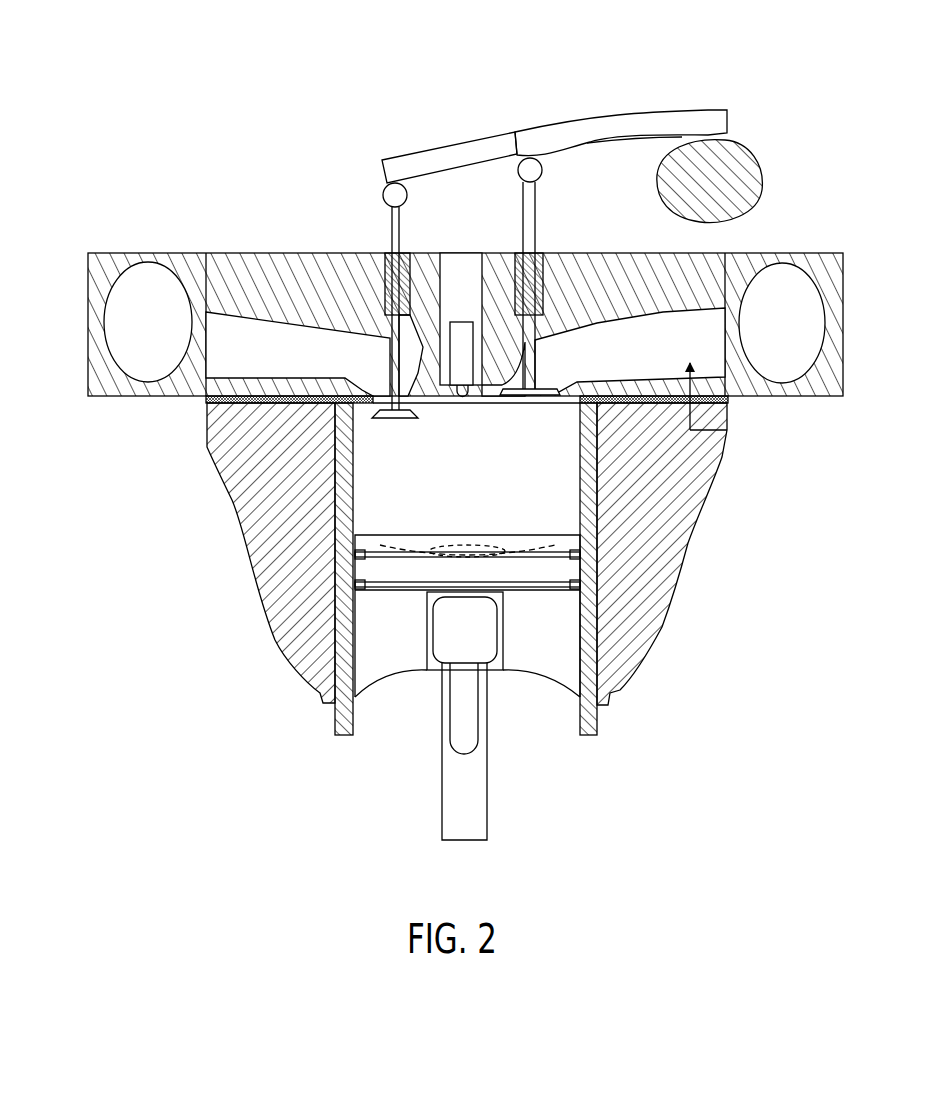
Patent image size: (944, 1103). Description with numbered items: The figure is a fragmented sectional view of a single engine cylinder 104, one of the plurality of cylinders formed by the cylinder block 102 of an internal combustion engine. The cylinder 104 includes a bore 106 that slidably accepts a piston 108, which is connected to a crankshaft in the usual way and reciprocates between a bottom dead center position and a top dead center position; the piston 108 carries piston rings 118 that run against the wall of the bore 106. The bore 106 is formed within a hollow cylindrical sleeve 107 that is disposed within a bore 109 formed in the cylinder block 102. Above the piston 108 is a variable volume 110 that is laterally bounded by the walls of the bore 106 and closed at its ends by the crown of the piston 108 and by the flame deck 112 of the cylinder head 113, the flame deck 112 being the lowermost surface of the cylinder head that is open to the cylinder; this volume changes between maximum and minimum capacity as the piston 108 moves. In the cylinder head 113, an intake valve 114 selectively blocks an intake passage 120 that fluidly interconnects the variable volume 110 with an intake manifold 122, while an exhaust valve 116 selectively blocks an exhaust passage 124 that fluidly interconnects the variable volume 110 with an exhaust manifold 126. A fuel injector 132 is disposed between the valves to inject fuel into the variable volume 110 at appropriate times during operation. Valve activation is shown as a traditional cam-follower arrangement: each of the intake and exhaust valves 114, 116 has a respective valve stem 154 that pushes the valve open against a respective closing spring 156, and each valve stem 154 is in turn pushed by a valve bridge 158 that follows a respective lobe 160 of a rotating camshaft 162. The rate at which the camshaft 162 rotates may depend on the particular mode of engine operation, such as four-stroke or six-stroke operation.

The cylinder block 102 is at (670, 503).
The engine cylinder 104 is at (248, 693).
The bore 106 is at (577, 483).
The hollow cylindrical sleeve 107 is at (588, 637).
The piston 108 is at (540, 664).
The bore in the cylinder block 109 is at (597, 687).
The variable volume 110 is at (446, 508).
The flame deck 112 is at (430, 400).
The cylinder head 113 is at (658, 258).
The intake valve 114 is at (373, 380).
The exhaust valve 116 is at (538, 387).
The piston ring 118 is at (578, 549).
The intake passage 120 is at (232, 335).
The intake manifold 122 is at (120, 325).
The exhaust passage 124 is at (692, 431).
The exhaust manifold 126 is at (781, 293).
The fuel injector 132 is at (465, 332).
The valve stem 154 is at (536, 232).
The closing spring 156 is at (548, 292).
The valve bridge 158 is at (405, 165).
The lobe 160 is at (715, 170).
The camshaft 162 is at (778, 78).